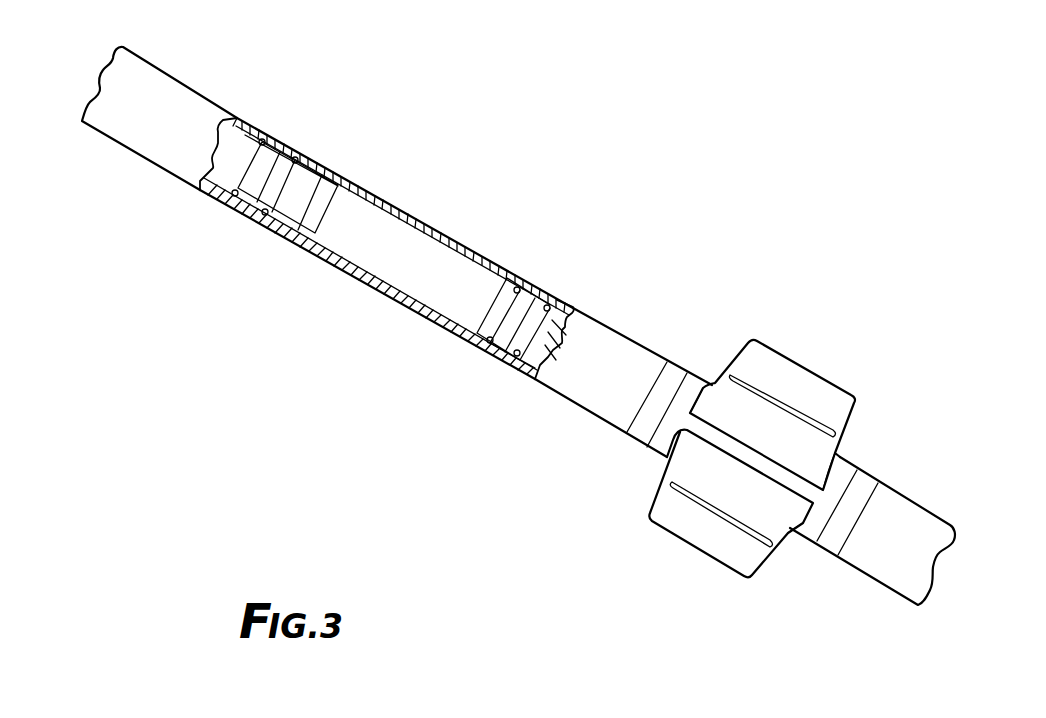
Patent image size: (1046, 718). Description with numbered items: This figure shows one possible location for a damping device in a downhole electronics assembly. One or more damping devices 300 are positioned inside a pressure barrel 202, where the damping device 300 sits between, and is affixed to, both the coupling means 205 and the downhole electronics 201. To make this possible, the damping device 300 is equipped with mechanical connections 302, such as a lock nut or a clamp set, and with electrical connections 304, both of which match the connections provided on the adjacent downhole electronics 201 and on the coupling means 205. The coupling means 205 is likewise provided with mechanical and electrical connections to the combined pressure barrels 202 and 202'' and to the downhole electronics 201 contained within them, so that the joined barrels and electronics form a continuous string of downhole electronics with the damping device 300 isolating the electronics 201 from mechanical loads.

The pressure barrel 202 is at (184, 101).
The downhole electronics 201 is at (244, 124).
The damping device 300 is at (465, 278).
The electrical connections 304 is at (207, 190).
The mechanical connections 302 is at (262, 194).
The coupling means 205 is at (810, 388).
The pressure barrel 202'' is at (844, 551).